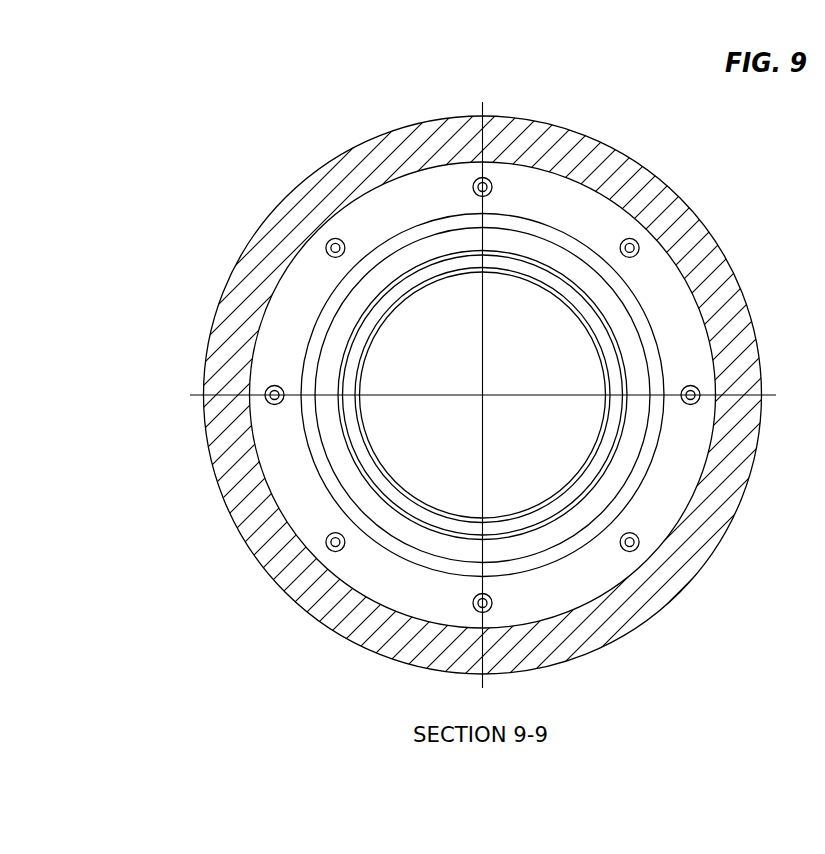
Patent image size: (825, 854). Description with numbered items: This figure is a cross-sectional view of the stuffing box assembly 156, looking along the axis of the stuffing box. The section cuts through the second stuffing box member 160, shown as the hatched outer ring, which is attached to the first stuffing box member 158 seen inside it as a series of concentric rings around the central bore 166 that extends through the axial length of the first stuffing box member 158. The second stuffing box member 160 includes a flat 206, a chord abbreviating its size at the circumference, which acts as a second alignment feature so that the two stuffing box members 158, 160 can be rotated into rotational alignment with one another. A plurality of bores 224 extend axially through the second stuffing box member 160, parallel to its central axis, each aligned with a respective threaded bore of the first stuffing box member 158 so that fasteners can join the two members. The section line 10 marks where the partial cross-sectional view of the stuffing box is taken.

The stuffing box assembly 156 is at (298, 149).
The bores 224 is at (338, 240).
The central bore 166 is at (377, 329).
The first stuffing box member 158 is at (620, 475).
The second stuffing box member 160 is at (637, 618).
The flat 206 is at (515, 670).
The section line 10- 10 is at (568, 310).